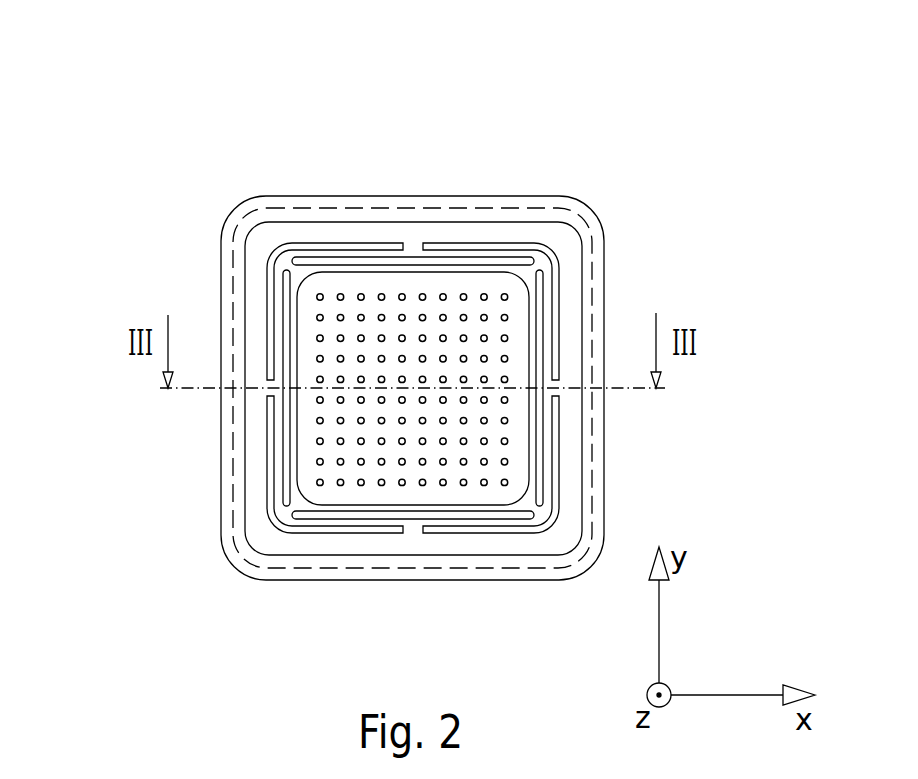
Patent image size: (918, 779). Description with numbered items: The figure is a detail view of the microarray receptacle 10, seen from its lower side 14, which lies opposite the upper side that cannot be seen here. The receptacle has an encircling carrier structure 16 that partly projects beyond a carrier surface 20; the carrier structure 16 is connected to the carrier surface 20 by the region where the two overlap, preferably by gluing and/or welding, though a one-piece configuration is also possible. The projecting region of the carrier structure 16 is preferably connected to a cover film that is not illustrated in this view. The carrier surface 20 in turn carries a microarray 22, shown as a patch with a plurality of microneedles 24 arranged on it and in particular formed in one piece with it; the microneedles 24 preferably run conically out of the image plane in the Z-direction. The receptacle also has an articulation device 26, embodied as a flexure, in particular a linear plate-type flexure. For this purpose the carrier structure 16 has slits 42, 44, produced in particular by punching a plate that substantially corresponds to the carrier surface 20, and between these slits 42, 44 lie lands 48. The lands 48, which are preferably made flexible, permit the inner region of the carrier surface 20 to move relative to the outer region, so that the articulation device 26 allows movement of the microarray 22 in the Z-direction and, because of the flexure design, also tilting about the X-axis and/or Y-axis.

The microarray receptacle 10 is at (225, 85).
The lower side 14 is at (158, 175).
The carrier structure 16 is at (228, 403).
The carrier surface 20 is at (568, 413).
The microarray 22 is at (305, 330).
The microneedles 24 is at (484, 483).
The articulation device 26 is at (294, 532).
The slits 42 is at (287, 448).
The slits 44 is at (272, 483).
The lands 48 is at (278, 492).